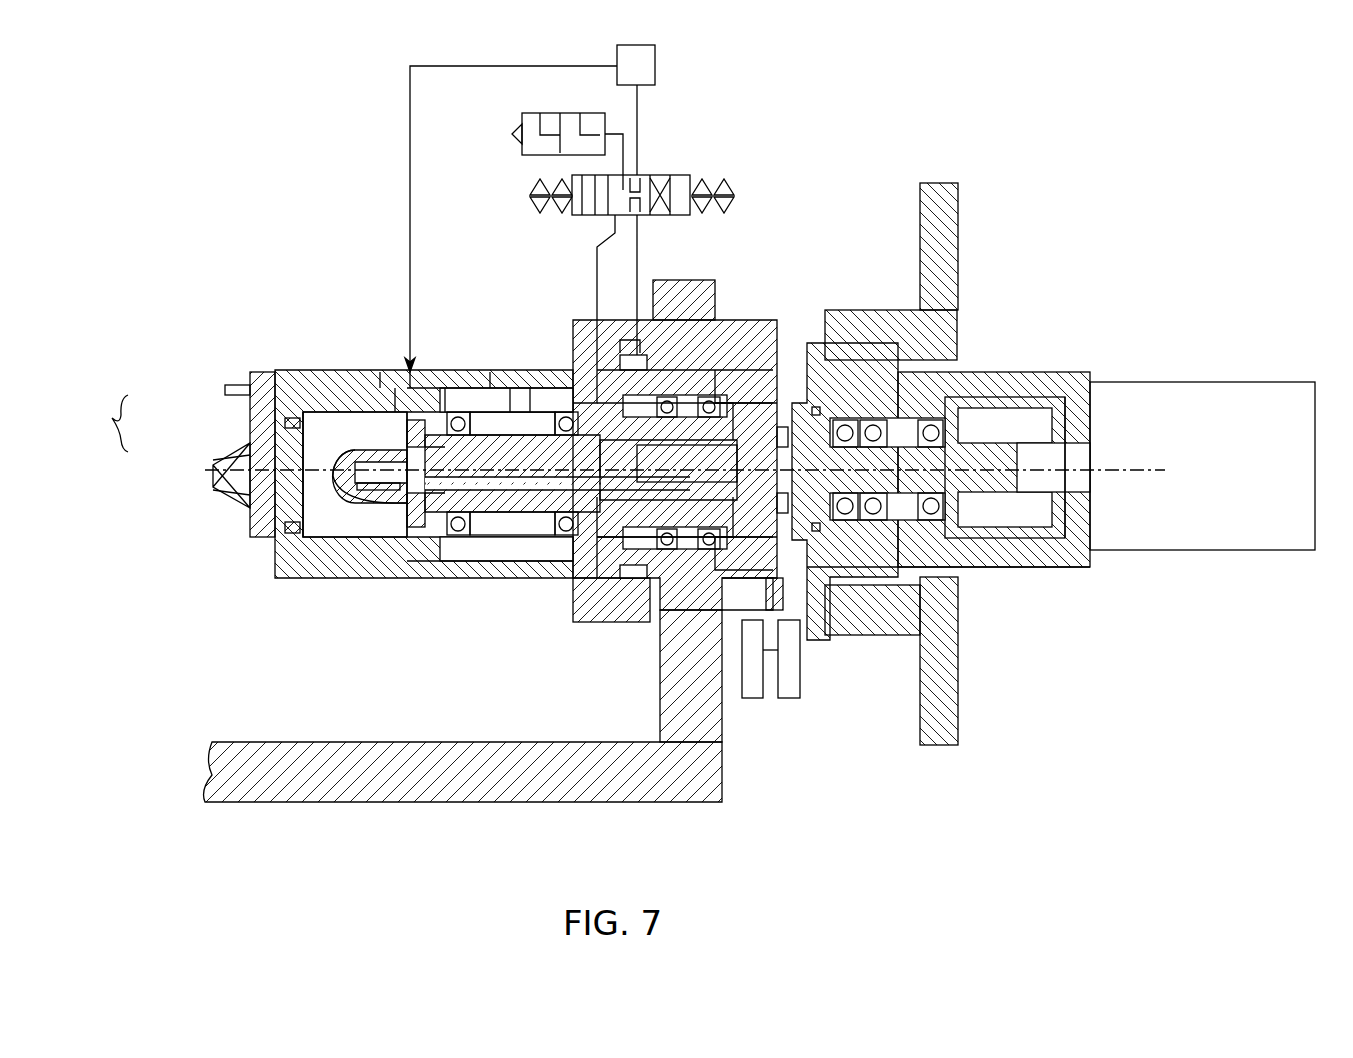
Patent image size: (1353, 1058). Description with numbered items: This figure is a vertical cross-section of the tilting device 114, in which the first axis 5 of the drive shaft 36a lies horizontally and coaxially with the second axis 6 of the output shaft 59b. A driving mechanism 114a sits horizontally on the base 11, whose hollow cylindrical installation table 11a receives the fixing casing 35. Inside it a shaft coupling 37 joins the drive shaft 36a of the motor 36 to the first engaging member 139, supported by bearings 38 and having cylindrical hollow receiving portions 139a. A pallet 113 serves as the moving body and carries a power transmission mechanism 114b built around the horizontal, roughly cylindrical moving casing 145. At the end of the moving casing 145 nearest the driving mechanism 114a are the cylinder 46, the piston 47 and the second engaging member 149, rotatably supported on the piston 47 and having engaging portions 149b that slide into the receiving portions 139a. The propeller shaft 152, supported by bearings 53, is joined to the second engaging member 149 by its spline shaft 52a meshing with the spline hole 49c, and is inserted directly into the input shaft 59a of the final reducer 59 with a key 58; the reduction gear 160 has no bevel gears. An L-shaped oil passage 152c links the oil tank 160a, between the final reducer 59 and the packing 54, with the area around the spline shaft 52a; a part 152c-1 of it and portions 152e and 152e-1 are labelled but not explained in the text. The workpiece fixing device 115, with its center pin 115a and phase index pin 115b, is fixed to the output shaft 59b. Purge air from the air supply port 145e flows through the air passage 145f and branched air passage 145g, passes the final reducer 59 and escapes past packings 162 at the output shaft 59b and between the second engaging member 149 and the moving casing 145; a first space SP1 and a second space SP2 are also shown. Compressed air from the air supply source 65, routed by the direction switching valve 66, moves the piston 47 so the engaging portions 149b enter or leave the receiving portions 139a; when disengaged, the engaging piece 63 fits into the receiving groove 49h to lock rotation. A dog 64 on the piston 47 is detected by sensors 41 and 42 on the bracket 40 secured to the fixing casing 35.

The air supply source 65 is at (615, 47).
The direction switching valve 66 is at (680, 177).
The engaging piece 63 is at (782, 425).
The receiving groove 49h is at (735, 370).
The receiving portions 139a is at (840, 310).
The base 11 is at (953, 260).
The tilting device 114 is at (1125, 178).
The air passage 145f is at (418, 372).
The air supply port 145e is at (398, 372).
The air passage 145g is at (488, 372).
The first space SP1 is at (410, 372).
The bearings 53 is at (455, 412).
The second space SP2 is at (520, 372).
The spline shaft 52a is at (700, 355).
The first engaging member 139 is at (805, 343).
The bearings 38 is at (870, 420).
The drive shaft 36a is at (1072, 398).
The motor 36 is at (1237, 382).
The moving casing 145 is at (293, 370).
The oil tank 160a is at (412, 420).
The spline hole 49c is at (615, 370).
The second engaging member 149 is at (760, 360).
The shaft coupling 37 is at (1020, 405).
The shaft flange portion 152e is at (580, 412).
The workpiece fixing device 115 is at (104, 423).
The phase index pin 115b is at (230, 390).
The center pin 115a is at (214, 460).
The first axis 5 is at (1120, 468).
The second axis 6 is at (225, 470).
The output shaft 59b is at (290, 530).
The packings 162 is at (262, 535).
The reduction gear 160 is at (323, 512).
The final reducer 59 is at (335, 512).
The input shaft 59a is at (345, 525).
The key 58 is at (415, 527).
The packing 54 is at (450, 520).
The oil passage 152c is at (445, 505).
The propeller shaft 152 is at (522, 512).
The shaft front end 152c-1 is at (340, 500).
The power transmission mechanism 114b is at (555, 622).
The piston 47 is at (612, 600).
The cylinder 46 is at (650, 560).
The pallet 113 is at (391, 742).
The engaging portions 149b is at (773, 600).
The installation table 11a is at (905, 635).
The driving mechanism 114a is at (1005, 582).
The fixing casing 35 is at (1080, 567).
The support column 152e-1 is at (665, 612).
The dog 64 is at (790, 612).
The sensor 42 is at (750, 698).
The sensor 41 is at (790, 698).
The bracket 40 is at (770, 660).